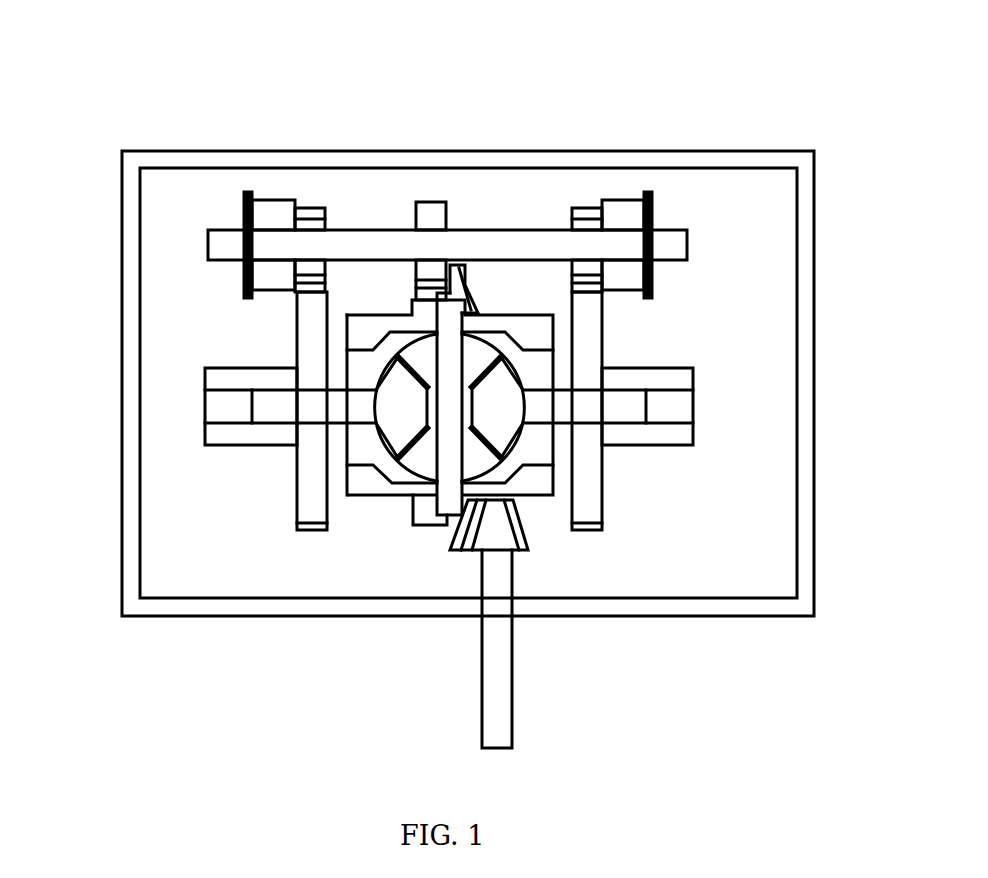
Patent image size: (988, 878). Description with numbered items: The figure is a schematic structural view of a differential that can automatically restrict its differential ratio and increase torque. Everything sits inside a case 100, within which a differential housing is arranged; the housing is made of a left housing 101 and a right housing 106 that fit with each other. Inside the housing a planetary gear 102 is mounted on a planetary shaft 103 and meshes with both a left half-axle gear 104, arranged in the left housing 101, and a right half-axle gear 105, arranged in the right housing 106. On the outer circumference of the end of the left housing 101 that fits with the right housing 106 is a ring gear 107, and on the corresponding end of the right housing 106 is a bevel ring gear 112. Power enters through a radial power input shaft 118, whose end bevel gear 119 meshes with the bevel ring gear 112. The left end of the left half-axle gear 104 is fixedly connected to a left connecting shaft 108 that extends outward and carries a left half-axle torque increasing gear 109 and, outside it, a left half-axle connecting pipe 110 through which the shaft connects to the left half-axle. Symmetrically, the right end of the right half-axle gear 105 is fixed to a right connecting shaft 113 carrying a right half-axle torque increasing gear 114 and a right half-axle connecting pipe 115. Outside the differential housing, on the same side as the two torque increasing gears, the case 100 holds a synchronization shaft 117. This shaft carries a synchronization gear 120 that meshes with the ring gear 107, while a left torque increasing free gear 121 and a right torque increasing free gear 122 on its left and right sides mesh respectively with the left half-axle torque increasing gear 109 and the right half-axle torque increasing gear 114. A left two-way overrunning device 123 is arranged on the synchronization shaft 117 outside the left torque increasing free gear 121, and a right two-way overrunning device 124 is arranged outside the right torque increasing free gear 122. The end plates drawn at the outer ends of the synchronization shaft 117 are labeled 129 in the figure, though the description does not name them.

The case 100 is at (775, 158).
The left housing 101 is at (373, 490).
The planetary gear 102 is at (477, 357).
The planetary shaft 103 is at (448, 317).
The left half-axle gear 104 is at (403, 388).
The right half-axle gear 105 is at (493, 392).
The right housing 106 is at (533, 482).
The ring gear 107 is at (423, 522).
The left connecting shaft 108 is at (263, 413).
The left half-axle torque increasing gear 109 is at (313, 480).
The left half-axle connecting pipe 110 is at (238, 435).
The bevel ring gear 112 is at (470, 300).
The right connecting shaft 113 is at (632, 413).
The right half-axle torque increasing gear 114 is at (585, 488).
The right half-axle connecting pipe 115 is at (668, 435).
The synchronization shaft 117 is at (233, 243).
The radial power input shaft 118 is at (500, 680).
The bevel gear 119 is at (497, 530).
The synchronization gear 120 is at (435, 215).
The left torque increasing free gear 121 is at (313, 222).
The right torque increasing free gear 122 is at (587, 220).
The left two-way overrunning device 123 is at (258, 190).
The right two-way overrunning device 124 is at (640, 188).
The end plate 129 is at (243, 205).